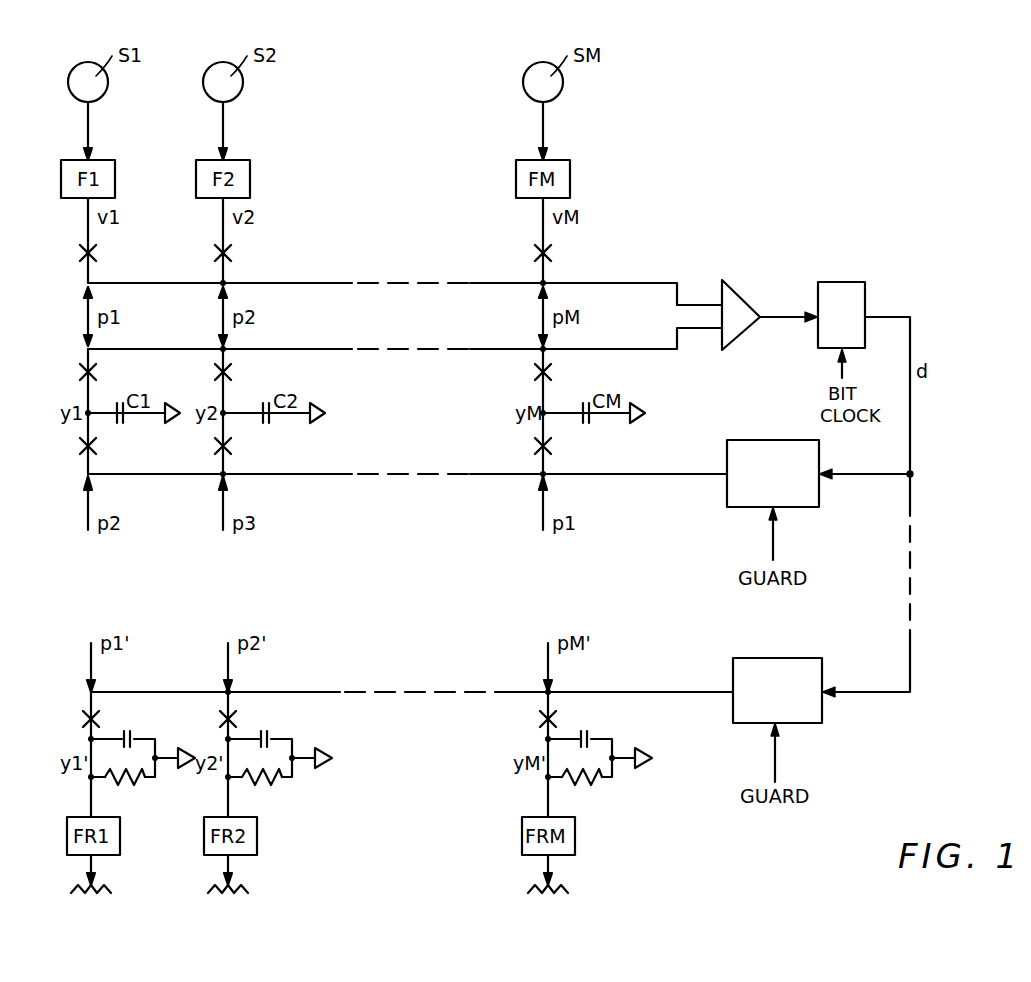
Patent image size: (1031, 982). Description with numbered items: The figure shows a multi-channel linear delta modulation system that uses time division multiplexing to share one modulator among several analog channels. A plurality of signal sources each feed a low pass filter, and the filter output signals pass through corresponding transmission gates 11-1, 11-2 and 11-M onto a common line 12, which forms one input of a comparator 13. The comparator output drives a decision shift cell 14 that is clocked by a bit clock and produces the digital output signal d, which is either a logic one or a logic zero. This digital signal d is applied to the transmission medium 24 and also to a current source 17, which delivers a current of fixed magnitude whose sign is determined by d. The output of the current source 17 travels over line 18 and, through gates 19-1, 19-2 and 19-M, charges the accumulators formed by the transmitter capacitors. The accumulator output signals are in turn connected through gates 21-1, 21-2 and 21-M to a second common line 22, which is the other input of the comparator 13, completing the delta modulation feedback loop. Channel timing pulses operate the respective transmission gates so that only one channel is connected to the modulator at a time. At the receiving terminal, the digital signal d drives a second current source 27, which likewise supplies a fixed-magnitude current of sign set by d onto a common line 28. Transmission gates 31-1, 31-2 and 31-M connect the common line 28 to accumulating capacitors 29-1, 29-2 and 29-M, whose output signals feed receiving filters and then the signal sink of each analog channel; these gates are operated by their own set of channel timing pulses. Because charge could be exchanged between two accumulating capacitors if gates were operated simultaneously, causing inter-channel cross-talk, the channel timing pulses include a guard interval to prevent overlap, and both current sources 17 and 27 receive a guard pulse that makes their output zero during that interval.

The transmission gate 11-1 is at (98, 253).
The transmission gate 11-2 is at (233, 253).
The transmission gate 11-M is at (553, 253).
The line 12 is at (345, 283).
The common line 22 is at (325, 349).
The line 18 is at (322, 474).
The gate 21-1 is at (98, 372).
The gate 21-2 is at (233, 372).
The gate 21-M is at (553, 372).
The gate 19-1 is at (98, 447).
The gate 19-2 is at (233, 447).
The gate 19-M is at (553, 447).
The comparator 13 is at (735, 298).
The decision shift cell 14 is at (860, 293).
The current source 17 is at (728, 440).
The transmission medium 24 is at (912, 552).
The current source 27 is at (772, 658).
The common line 28 is at (315, 692).
The transmission gate 31-1 is at (99, 722).
The transmission gate 31-2 is at (236, 722).
The transmission gate 31-M is at (556, 722).
The accumulating capacitor 29-1 is at (127, 731).
The accumulating capacitor 29-2 is at (264, 731).
The accumulating capacitor 29-M is at (584, 731).